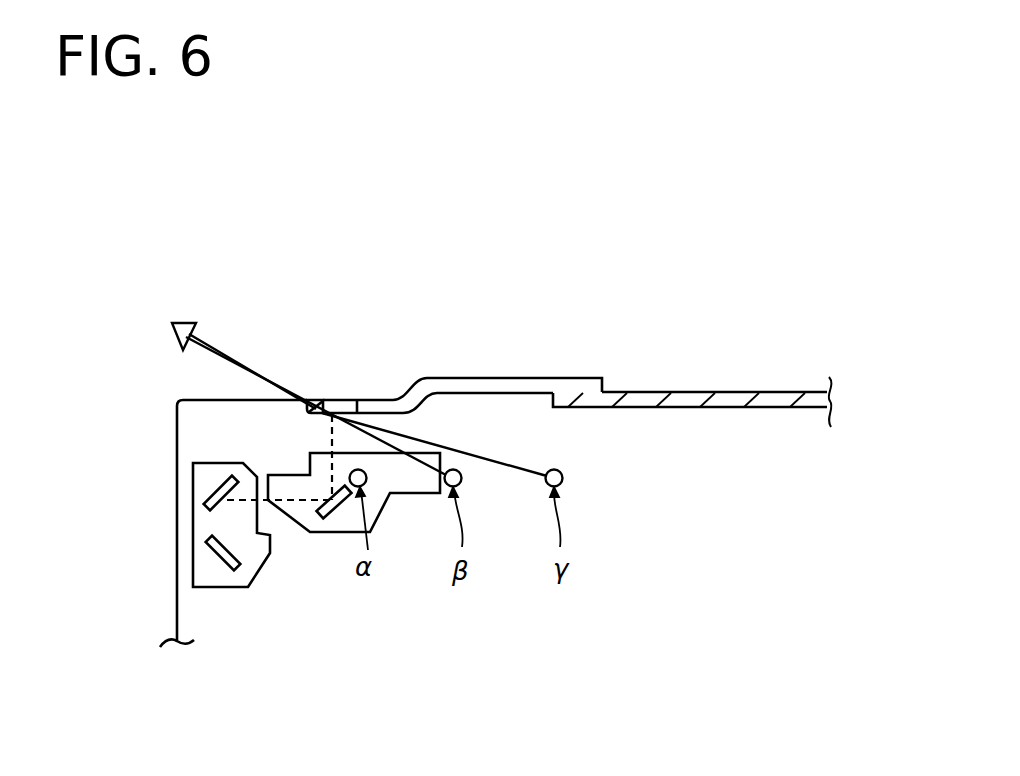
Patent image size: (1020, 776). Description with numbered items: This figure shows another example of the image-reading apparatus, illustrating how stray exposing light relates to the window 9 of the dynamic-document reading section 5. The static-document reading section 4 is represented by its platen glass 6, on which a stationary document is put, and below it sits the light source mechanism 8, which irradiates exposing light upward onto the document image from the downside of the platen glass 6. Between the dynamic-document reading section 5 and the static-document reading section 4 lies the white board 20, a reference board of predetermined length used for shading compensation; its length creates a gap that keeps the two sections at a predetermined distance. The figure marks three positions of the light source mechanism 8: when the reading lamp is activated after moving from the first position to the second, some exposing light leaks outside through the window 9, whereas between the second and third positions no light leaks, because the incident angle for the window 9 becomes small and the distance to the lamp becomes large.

The window 9 is at (372, 367).
The dynamic-document reading section 5 is at (315, 406).
The white board 20 is at (497, 378).
The platen glass 6 is at (692, 364).
The static-document reading section 4 is at (712, 391).
The light source mechanism 8 is at (403, 490).